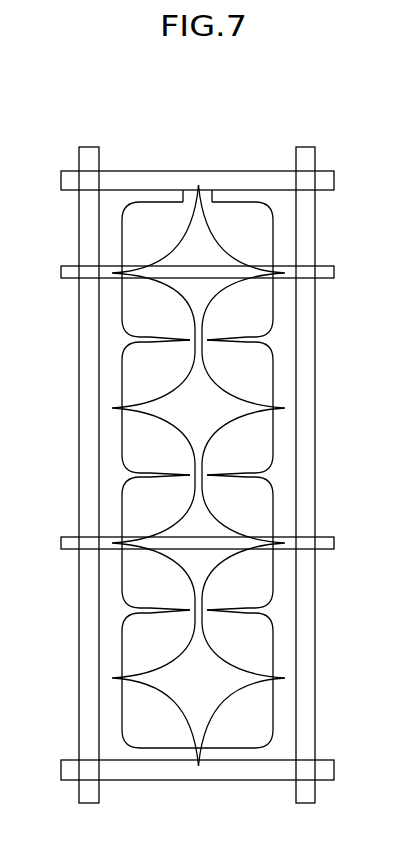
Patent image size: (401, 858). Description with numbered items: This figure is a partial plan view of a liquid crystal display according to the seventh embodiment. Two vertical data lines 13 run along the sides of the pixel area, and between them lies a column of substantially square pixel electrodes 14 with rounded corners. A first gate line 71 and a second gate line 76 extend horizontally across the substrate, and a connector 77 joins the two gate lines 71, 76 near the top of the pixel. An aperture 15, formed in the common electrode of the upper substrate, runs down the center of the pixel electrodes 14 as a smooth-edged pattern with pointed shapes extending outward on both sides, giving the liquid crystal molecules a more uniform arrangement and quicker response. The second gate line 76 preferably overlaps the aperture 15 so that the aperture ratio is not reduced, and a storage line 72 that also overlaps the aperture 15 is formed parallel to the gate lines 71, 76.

The data line 13 is at (80, 377).
The pixel electrode 14 is at (273, 368).
The aperture 15 is at (198, 623).
The first gate line 71 is at (203, 171).
The storage line 72 is at (334, 543).
The second gate line 76 is at (334, 271).
The connector 77 is at (185, 217).